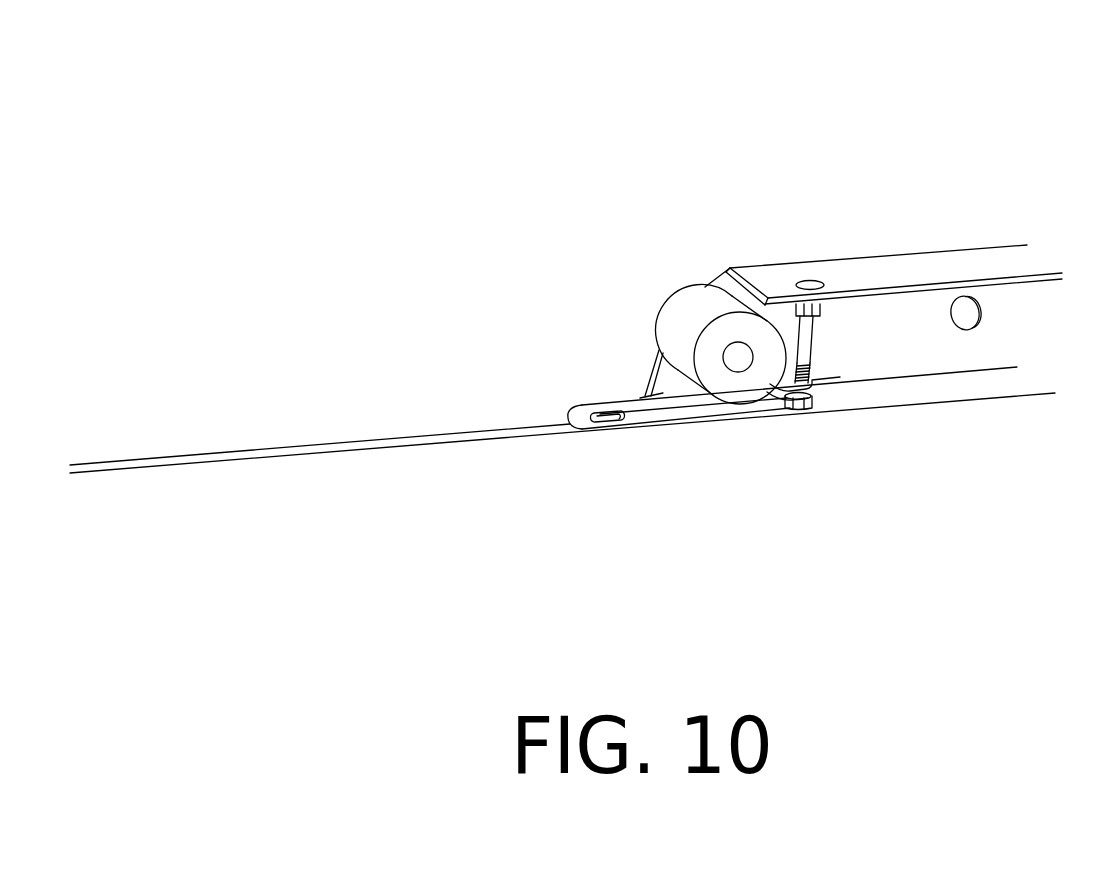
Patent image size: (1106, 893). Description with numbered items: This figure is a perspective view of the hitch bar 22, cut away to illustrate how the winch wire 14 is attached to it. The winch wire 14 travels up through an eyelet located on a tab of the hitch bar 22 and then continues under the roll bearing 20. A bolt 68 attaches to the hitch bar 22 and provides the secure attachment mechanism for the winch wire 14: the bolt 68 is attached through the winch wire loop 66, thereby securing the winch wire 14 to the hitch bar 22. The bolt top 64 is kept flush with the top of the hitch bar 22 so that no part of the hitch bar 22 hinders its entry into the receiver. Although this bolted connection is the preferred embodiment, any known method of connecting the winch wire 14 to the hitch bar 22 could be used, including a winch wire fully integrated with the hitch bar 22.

The winch wire 14 is at (648, 416).
The roll bearing 20 is at (682, 330).
The hitch bar 22 is at (655, 170).
The bolt top 64 is at (813, 282).
The winch wire loop 66 is at (817, 413).
The bolt 68 is at (803, 350).